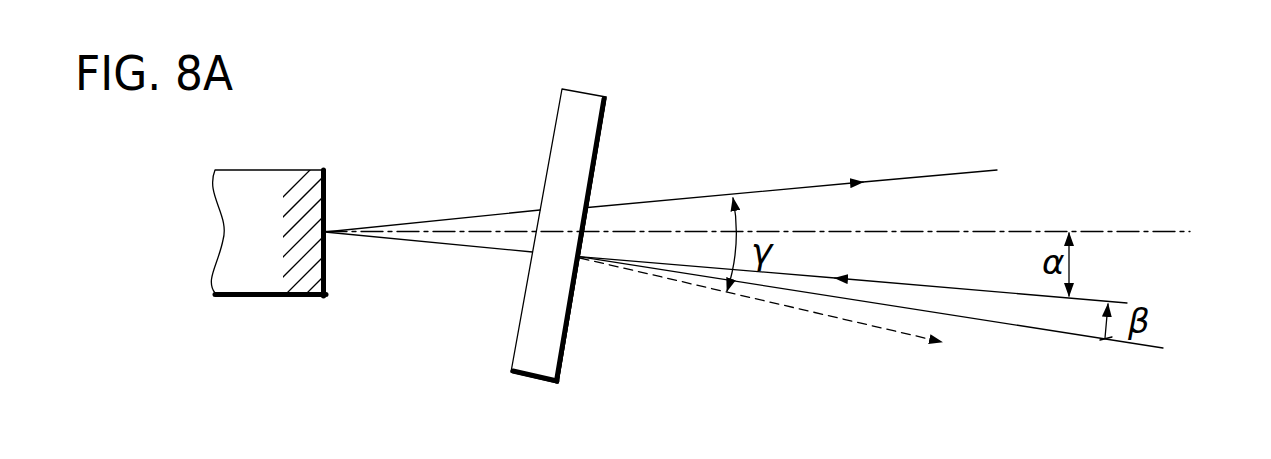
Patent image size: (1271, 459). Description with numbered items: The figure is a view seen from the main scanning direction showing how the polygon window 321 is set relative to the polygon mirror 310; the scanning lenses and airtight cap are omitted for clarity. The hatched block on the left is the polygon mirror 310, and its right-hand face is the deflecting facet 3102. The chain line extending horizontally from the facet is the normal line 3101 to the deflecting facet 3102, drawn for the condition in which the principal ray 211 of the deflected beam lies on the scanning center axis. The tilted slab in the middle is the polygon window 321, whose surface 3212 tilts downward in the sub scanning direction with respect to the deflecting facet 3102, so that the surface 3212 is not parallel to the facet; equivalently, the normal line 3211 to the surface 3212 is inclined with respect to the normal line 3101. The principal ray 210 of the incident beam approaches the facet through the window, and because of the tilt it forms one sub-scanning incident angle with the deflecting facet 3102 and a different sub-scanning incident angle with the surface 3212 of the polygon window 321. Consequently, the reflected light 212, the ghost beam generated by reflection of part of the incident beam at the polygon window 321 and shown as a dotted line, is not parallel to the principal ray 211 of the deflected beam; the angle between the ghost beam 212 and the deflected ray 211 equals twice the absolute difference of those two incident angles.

The polygon mirror 310 is at (260, 172).
The deflecting facet 3102 is at (327, 185).
The normal line 3101 is at (980, 231).
The polygon window 321 is at (582, 90).
The surface of the polygon window 3212 is at (601, 148).
The principal ray of the deflected beam 211 is at (918, 175).
The principal ray of the incident beam 210 is at (893, 284).
The normal line to the surface of the polygon window 3211 is at (1085, 338).
The reflected light (ghost beam) 212 is at (803, 310).